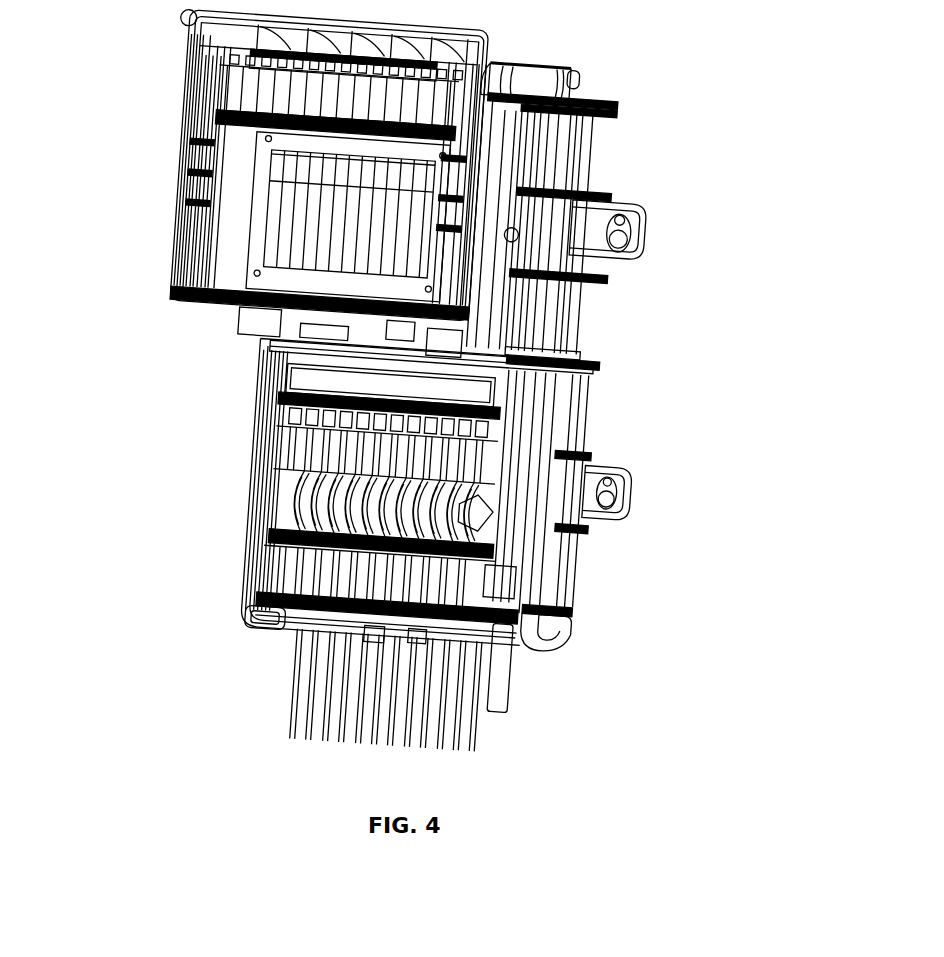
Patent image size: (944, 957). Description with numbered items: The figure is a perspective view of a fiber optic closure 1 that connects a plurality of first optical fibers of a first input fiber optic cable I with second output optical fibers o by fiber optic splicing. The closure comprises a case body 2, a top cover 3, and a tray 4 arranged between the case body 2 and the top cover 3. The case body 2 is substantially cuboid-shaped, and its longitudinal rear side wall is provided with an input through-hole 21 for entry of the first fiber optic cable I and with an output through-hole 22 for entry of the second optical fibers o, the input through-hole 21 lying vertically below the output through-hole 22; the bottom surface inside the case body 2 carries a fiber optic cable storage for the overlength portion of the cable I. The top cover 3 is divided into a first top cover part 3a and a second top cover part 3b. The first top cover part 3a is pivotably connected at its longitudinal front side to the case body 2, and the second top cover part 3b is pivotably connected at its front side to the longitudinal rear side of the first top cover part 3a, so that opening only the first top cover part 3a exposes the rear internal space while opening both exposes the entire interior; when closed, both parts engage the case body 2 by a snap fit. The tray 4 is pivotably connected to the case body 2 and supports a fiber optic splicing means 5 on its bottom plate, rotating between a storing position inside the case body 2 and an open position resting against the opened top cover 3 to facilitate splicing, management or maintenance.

The fiber optic closure 1 is at (621, 73).
The case body 2 is at (258, 552).
The input through-hole 21 is at (510, 590).
The output through-hole 22 is at (260, 590).
The top cover 3 is at (222, 190).
The first top cover part 3a is at (445, 190).
The second top cover part 3b is at (492, 278).
The tray 4 is at (505, 492).
The fiber optic splicing means 5 is at (300, 452).
The second output optical fibers o is at (292, 690).
The first input fiber optic cable I is at (508, 692).